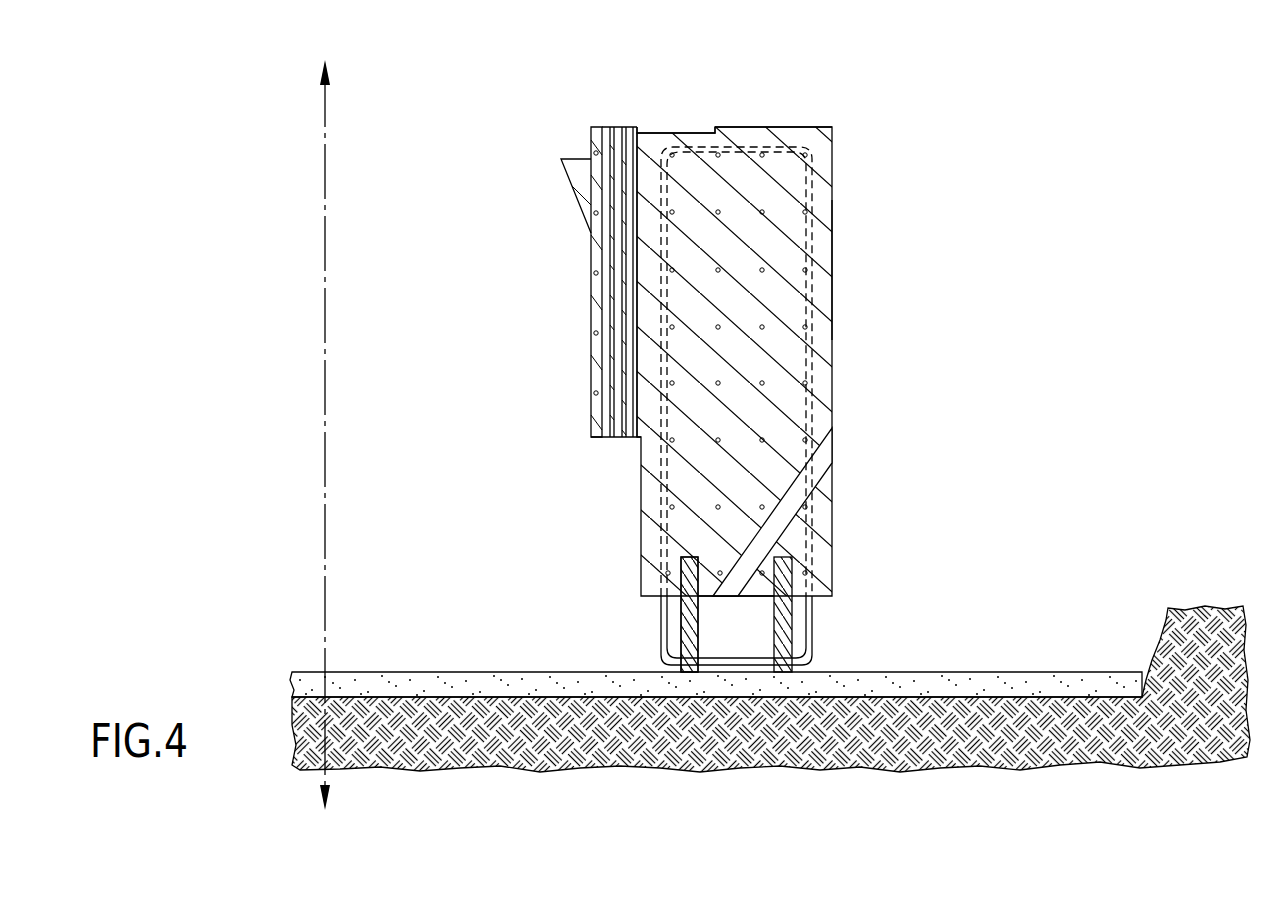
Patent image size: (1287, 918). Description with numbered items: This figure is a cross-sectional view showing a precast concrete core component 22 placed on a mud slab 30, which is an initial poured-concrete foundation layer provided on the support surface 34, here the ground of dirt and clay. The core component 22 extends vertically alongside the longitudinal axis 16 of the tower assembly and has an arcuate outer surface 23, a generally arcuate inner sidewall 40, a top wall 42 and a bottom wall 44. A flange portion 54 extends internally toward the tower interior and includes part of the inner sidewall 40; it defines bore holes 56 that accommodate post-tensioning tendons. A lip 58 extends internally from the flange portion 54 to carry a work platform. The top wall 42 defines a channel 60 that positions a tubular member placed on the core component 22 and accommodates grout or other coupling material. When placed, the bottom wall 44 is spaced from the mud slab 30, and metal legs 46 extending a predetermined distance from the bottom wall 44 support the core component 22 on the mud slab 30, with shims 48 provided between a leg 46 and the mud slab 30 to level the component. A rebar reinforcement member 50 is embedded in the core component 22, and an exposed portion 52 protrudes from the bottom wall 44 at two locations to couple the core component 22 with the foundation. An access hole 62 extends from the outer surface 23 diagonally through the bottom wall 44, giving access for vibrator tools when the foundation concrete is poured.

The longitudinal axis 16 is at (325, 435).
The core component 22 is at (874, 110).
The arcuate outer surface 23 is at (832, 267).
The mud slab 30 is at (1058, 660).
The support surface 34 is at (1250, 632).
The inner sidewall 40 is at (591, 360).
The top wall 42 is at (752, 127).
The bottom wall 44 is at (755, 597).
The legs 46 is at (681, 616).
The shims 48 is at (813, 660).
The reinforcement member 50 is at (650, 502).
The portion of reinforcement member 52 is at (661, 650).
The flange portion 54 is at (578, 447).
The bore holes 56 is at (628, 118).
The lip 58 is at (558, 145).
The channel 60 is at (663, 133).
The access hole 62 is at (846, 434).